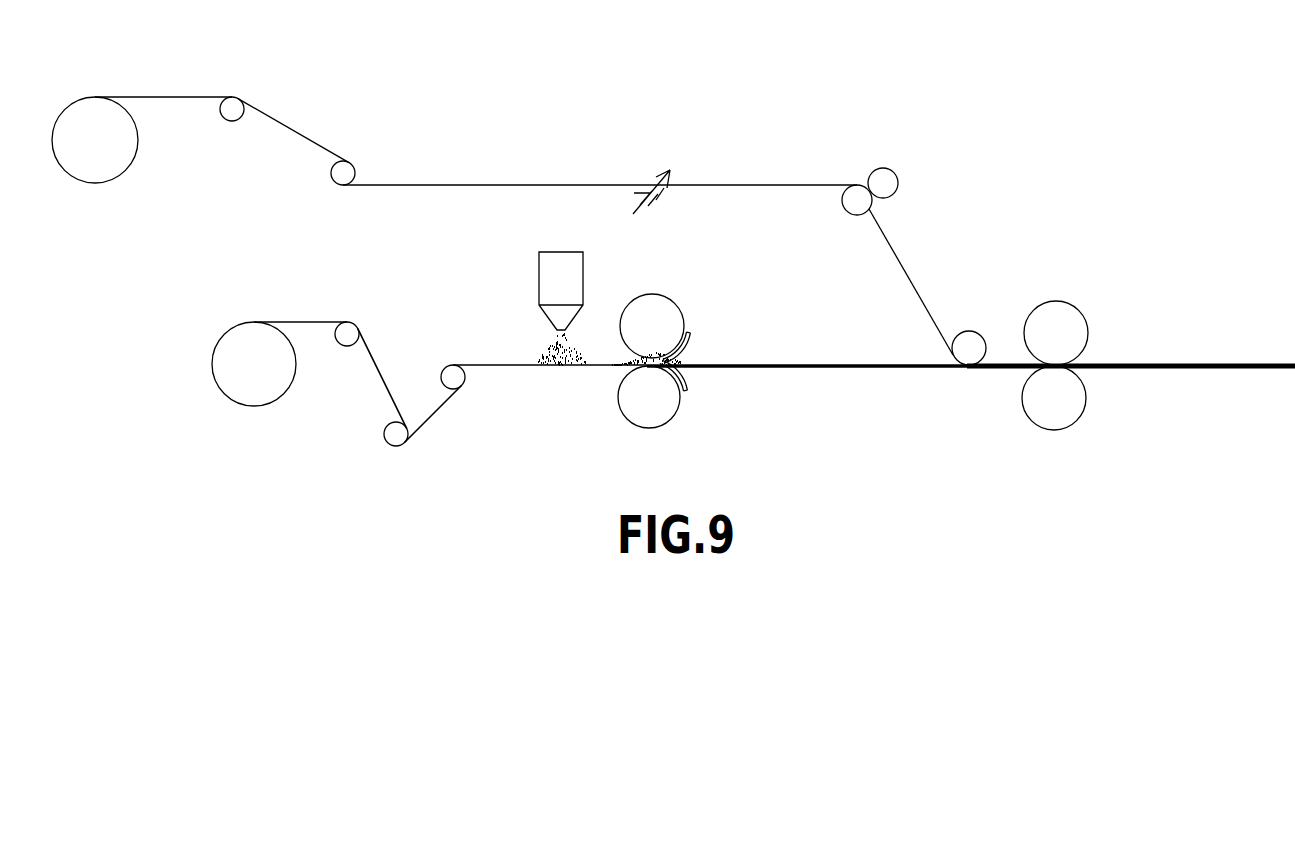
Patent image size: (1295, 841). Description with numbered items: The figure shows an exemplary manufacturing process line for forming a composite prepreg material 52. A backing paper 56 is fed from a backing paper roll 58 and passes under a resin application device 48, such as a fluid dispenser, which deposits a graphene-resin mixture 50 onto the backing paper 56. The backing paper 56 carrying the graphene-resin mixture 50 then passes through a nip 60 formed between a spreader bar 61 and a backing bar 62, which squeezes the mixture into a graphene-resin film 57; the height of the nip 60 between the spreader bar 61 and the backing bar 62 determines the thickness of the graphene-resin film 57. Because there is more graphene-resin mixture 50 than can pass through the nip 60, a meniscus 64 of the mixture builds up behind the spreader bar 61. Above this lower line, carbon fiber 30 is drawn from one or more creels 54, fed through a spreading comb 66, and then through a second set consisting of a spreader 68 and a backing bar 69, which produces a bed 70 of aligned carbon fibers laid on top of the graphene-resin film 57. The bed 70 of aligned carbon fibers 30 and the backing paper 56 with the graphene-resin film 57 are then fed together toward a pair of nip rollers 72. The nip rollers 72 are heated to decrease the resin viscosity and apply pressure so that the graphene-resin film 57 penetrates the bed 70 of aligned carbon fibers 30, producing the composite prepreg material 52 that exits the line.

The carbon fiber 30 is at (192, 96).
The resin application device 48 is at (538, 267).
The graphene-resin mixture 50 is at (553, 340).
The composite prepreg material 52 is at (1242, 362).
The creel 54 is at (72, 128).
The backing paper 56 is at (372, 393).
The graphene-resin film 57 is at (837, 364).
The backing paper roll 58 is at (233, 342).
The nip 60 is at (673, 365).
The spreader bar 61 is at (676, 358).
The backing bar 62 is at (687, 387).
The meniscus 64 is at (628, 355).
The spreading comb 66 is at (663, 172).
The spreader 68 is at (887, 178).
The backing bar 69 is at (850, 207).
The bed of aligned carbon fibers 70 is at (908, 263).
The nip rollers 72 is at (1060, 385).